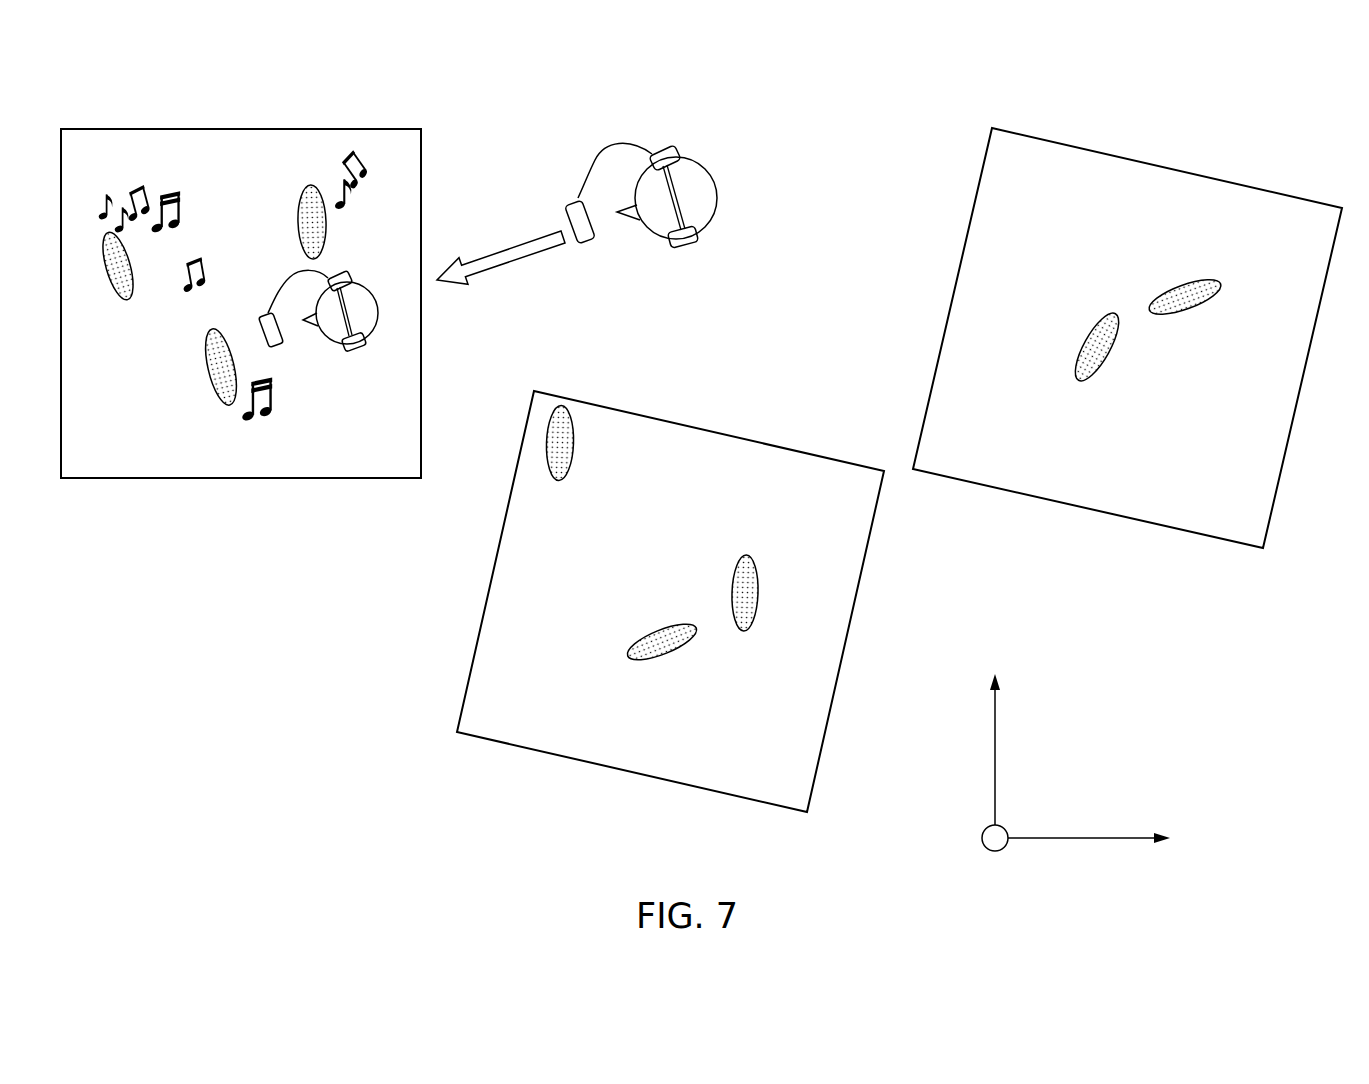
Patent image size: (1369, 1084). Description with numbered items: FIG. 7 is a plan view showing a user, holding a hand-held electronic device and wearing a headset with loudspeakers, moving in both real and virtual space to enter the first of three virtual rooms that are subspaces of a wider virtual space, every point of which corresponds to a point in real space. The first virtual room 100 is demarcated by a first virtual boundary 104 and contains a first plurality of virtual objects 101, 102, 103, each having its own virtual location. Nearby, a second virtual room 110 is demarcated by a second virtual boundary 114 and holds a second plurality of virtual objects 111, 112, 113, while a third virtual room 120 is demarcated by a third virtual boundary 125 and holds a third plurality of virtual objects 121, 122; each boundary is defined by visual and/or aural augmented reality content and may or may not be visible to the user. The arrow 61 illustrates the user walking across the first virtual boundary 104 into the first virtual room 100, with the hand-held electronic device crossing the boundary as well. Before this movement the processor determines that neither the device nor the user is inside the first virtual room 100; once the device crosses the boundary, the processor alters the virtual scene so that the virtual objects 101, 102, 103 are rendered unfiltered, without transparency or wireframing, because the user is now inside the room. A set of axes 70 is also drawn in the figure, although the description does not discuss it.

The arrow 61 is at (507, 270).
The coordinate system 70 is at (1092, 731).
The first virtual room 100 is at (308, 160).
The virtual object 101 is at (128, 300).
The virtual object 102 is at (215, 393).
The virtual object 103 is at (299, 208).
The first virtual boundary 104 is at (198, 128).
The second virtual room 110 is at (670, 587).
The virtual object 111 is at (567, 478).
The virtual object 112 is at (645, 660).
The virtual object 113 is at (745, 633).
The second virtual boundary 114 is at (653, 414).
The third virtual room 120 is at (1127, 333).
The virtual object 121 is at (1087, 382).
The virtual object 122 is at (1172, 312).
The second display region boundary 125 is at (1163, 170).